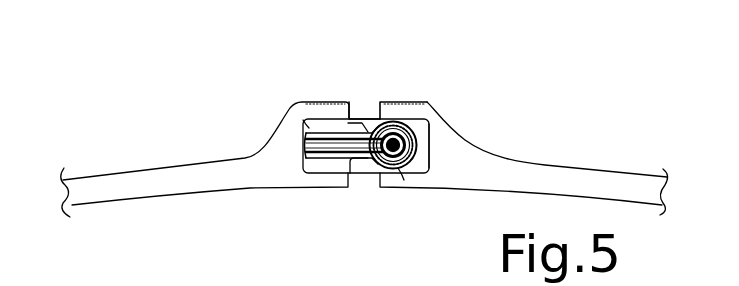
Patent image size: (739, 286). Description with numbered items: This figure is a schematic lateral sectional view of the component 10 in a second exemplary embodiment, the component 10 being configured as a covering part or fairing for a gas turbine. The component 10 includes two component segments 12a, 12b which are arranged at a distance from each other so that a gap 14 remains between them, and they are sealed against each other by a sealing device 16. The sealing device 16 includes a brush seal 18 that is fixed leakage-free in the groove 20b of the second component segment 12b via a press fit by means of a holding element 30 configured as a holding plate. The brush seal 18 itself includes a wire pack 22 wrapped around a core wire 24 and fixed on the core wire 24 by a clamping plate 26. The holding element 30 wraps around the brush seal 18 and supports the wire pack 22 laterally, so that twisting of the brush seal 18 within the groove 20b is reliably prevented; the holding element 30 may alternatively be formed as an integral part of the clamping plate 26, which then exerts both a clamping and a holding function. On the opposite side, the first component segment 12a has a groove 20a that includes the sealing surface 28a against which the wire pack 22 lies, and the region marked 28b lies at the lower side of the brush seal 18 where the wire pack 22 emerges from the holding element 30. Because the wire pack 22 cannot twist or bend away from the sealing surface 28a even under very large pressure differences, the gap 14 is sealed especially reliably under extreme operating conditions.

The component 10 is at (170, 77).
The first component segment 12a is at (108, 178).
The second component segment 12b is at (607, 178).
The gap 14 is at (355, 78).
The sealing device 16 is at (457, 92).
The brush seal 18 is at (432, 140).
The groove 20a is at (333, 113).
The groove 20b is at (393, 108).
The wire pack 22 is at (312, 172).
The core wire 24 is at (394, 167).
The clamping plate 26 is at (431, 103).
The sealing surface 28a is at (303, 120).
The second spring leg 28b is at (404, 182).
The holding element 30 is at (361, 166).